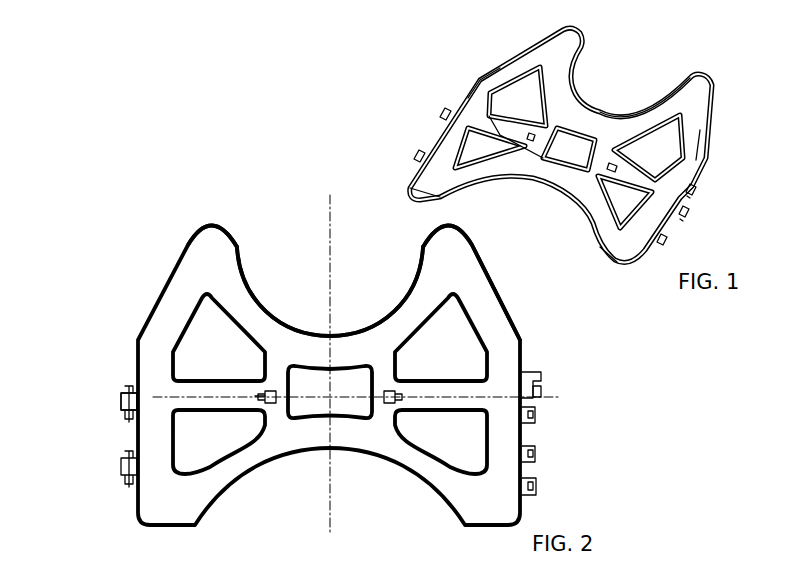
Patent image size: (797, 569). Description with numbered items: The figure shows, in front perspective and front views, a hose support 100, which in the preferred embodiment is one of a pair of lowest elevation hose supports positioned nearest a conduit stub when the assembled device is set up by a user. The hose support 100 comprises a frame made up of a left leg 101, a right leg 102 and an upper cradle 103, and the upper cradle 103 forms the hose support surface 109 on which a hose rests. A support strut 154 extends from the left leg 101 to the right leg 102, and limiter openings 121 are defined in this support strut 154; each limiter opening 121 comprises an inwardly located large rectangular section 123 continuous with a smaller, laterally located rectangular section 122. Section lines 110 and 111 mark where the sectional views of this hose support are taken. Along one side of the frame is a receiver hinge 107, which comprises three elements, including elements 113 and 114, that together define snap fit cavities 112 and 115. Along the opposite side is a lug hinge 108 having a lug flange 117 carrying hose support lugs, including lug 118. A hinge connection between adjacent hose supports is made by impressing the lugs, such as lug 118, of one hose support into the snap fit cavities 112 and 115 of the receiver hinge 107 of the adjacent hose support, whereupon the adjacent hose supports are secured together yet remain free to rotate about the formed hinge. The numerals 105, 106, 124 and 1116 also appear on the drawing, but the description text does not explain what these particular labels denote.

In FIG. 1, the hose support 100 is at (405, 108).
In FIG. 2, the hose support 100 is at (165, 252).
In FIG. 1, the left leg 101 is at (478, 97).
In FIG. 2, the left leg 101 is at (200, 250).
In FIG. 1, the right leg 102 is at (693, 142).
In FIG. 2, the right leg 102 is at (450, 265).
In FIG. 1, the upper cradle 103 is at (658, 112).
In FIG. 2, the upper cradle 103 is at (390, 333).
In FIG. 1, the front face 105 is at (420, 181).
In FIG. 1, the rear face 106 is at (619, 262).
In FIG. 1, the receiver hinge 107 is at (662, 240).
In FIG. 1, the lug hinge 108 is at (423, 152).
In FIG. 1, the hose support surface 109 is at (633, 115).
In FIG. 2, the hose support surface 109 is at (272, 315).
In FIG. 2, the section 110 is at (330, 197).
In FIG. 2, the section 111 is at (153, 397).
In FIG. 2, the snap fit cavity 112 is at (534, 374).
In FIG. 2, the receiver hinge element 113 is at (542, 386).
In FIG. 2, the receiver hinge element 114 is at (541, 449).
In FIG. 2, the snap fit cavity 115 is at (538, 426).
In FIG. 2, the tab 1116 is at (543, 498).
In FIG. 2, the lug flange 117 is at (119, 402).
In FIG. 2, the hose support lug 118 is at (127, 384).
In FIG. 1, the limiter opening 121 is at (532, 136).
In FIG. 2, the smaller rectangular section 122 is at (258, 399).
In FIG. 2, the large rectangular section 123 is at (270, 404).
In FIG. 2, the apertures 124 is at (306, 384).
In FIG. 1, the support strut 154 is at (500, 136).